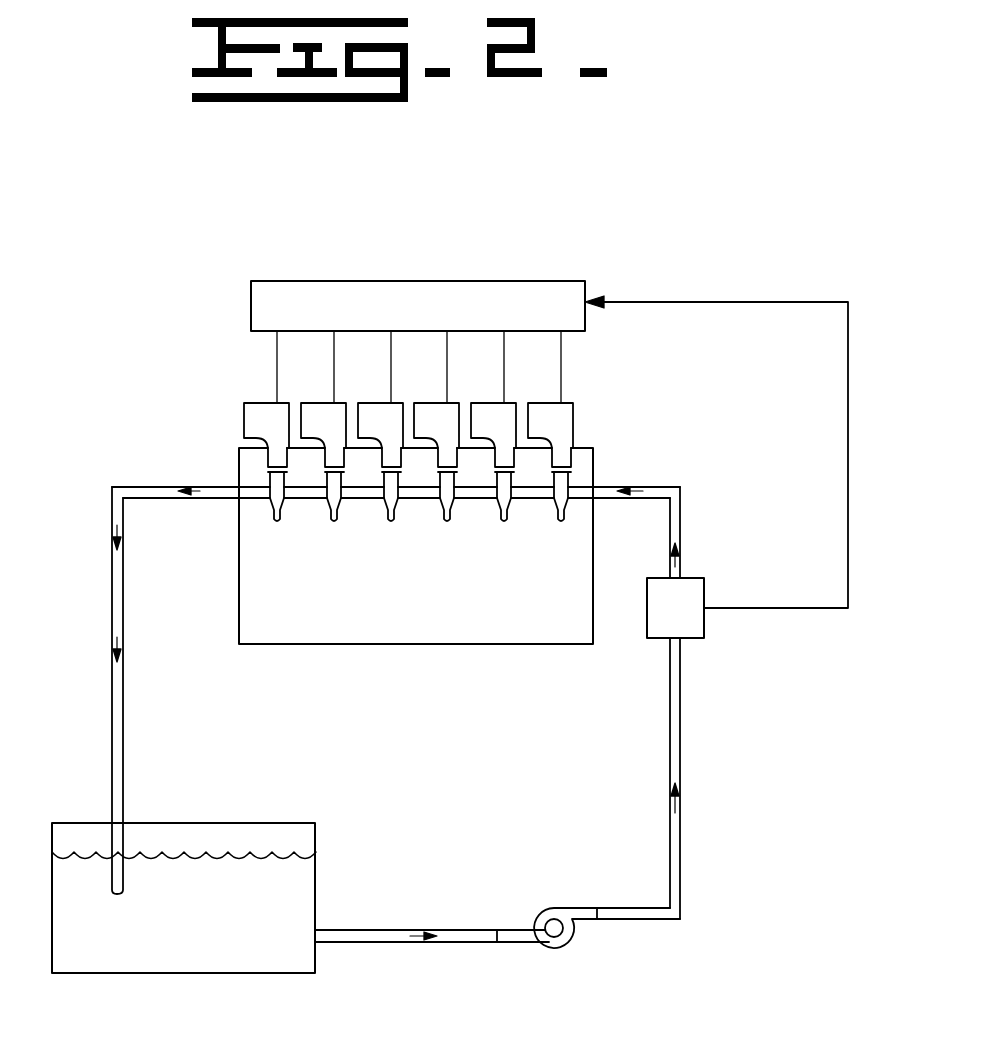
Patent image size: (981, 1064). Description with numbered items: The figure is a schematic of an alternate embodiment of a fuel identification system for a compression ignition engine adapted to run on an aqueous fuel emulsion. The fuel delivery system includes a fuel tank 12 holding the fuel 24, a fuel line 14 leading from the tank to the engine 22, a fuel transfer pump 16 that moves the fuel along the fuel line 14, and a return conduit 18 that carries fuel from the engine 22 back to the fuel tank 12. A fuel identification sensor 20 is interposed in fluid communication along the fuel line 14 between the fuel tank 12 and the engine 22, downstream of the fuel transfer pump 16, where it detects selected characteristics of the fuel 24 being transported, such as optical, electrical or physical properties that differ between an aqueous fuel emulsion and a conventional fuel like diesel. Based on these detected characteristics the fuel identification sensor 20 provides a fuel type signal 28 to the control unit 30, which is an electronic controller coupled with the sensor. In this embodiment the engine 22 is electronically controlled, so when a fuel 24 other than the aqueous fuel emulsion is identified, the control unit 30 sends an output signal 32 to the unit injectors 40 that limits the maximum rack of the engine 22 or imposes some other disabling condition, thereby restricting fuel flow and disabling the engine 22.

The fuel tank 12 is at (250, 823).
The fuel line 14 is at (680, 757).
The fuel transfer pump 16 is at (548, 948).
The return conduit 18 is at (123, 733).
The fuel identification sensor 20 is at (704, 620).
The engine 22 is at (430, 562).
The fuel 24 is at (197, 915).
The fuel type signal 28 is at (848, 572).
The control unit 30 is at (335, 281).
The output signal 32 is at (272, 398).
The unit injectors 40 is at (244, 417).